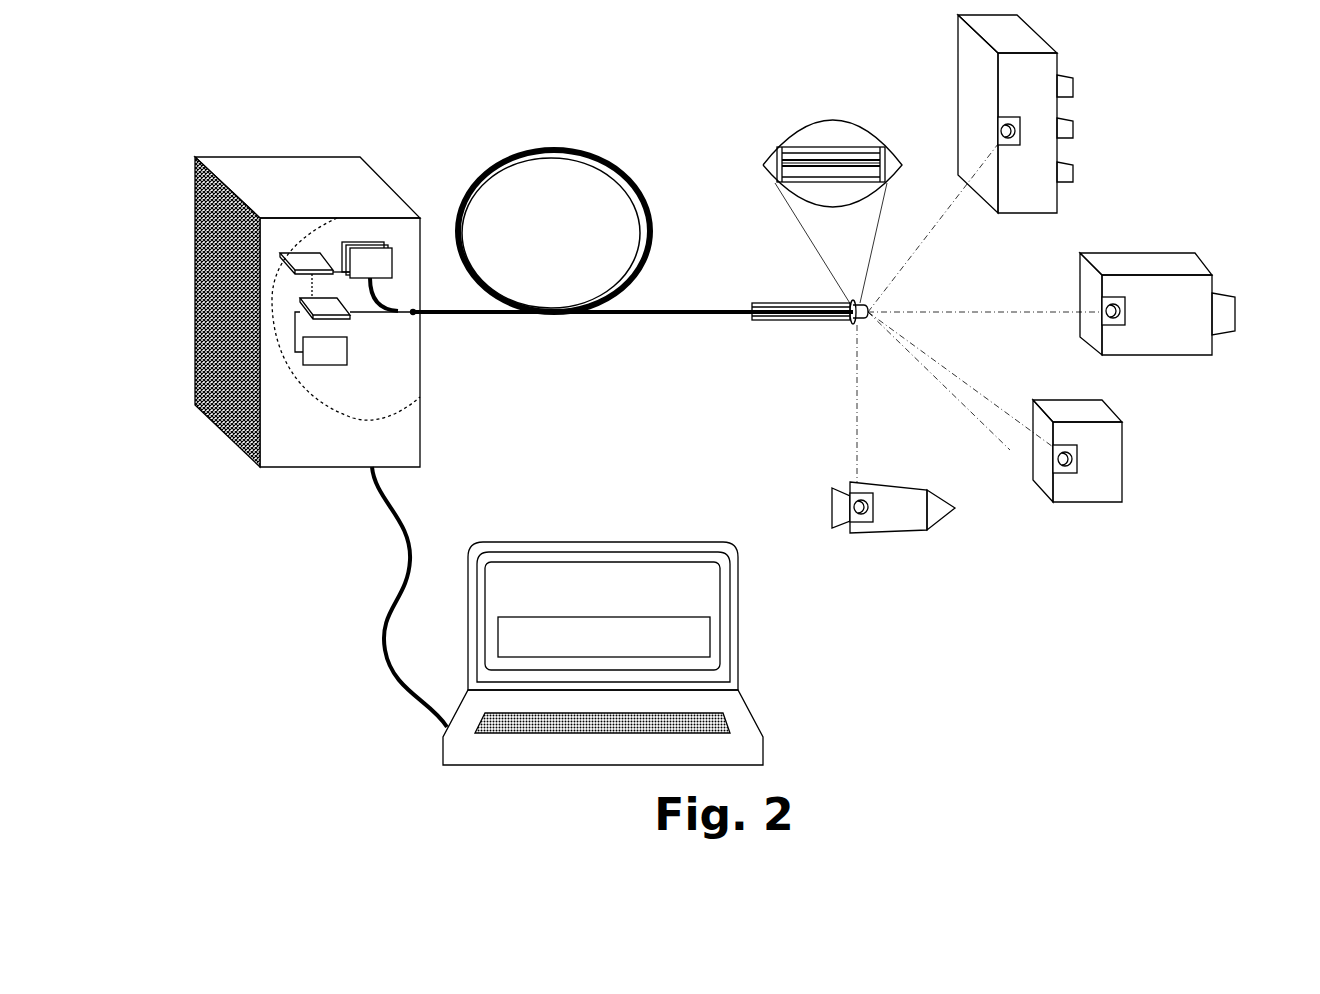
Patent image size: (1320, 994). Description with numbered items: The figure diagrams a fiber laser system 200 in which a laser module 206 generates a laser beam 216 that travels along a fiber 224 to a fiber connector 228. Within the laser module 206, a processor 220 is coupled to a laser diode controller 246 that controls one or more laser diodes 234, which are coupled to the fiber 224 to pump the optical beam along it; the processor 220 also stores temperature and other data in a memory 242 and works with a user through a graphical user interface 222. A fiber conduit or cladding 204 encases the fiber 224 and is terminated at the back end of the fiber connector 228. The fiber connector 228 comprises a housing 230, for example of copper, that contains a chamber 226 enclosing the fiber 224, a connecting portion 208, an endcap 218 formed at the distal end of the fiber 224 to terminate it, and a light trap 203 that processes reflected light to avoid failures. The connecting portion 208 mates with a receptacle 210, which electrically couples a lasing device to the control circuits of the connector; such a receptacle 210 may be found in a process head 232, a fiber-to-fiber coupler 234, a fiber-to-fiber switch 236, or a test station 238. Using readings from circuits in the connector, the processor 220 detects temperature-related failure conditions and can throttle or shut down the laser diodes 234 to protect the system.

The fiber laser system 200 is at (485, 100).
The light trap 203 is at (800, 152).
The fiber conduit or cladding 204 is at (862, 150).
The laser module 206 is at (300, 160).
The connecting portion 208 is at (858, 322).
The receptacle 210 is at (1012, 140).
The laser beam 216 is at (858, 325).
The endcap 218 is at (864, 304).
The processor 220 is at (337, 322).
The graphical user interface 222 is at (659, 597).
The fiber 224 is at (706, 315).
The chamber 226 is at (810, 310).
The fiber connector 228 is at (810, 305).
The housing 230 is at (778, 322).
The process head 232 is at (882, 517).
The laser diodes 234 is at (383, 273).
The fiber-to-fiber switch 236 is at (1010, 79).
The test station 238 is at (1084, 447).
The memory 242 is at (337, 360).
The laser diode controller 246 is at (314, 256).